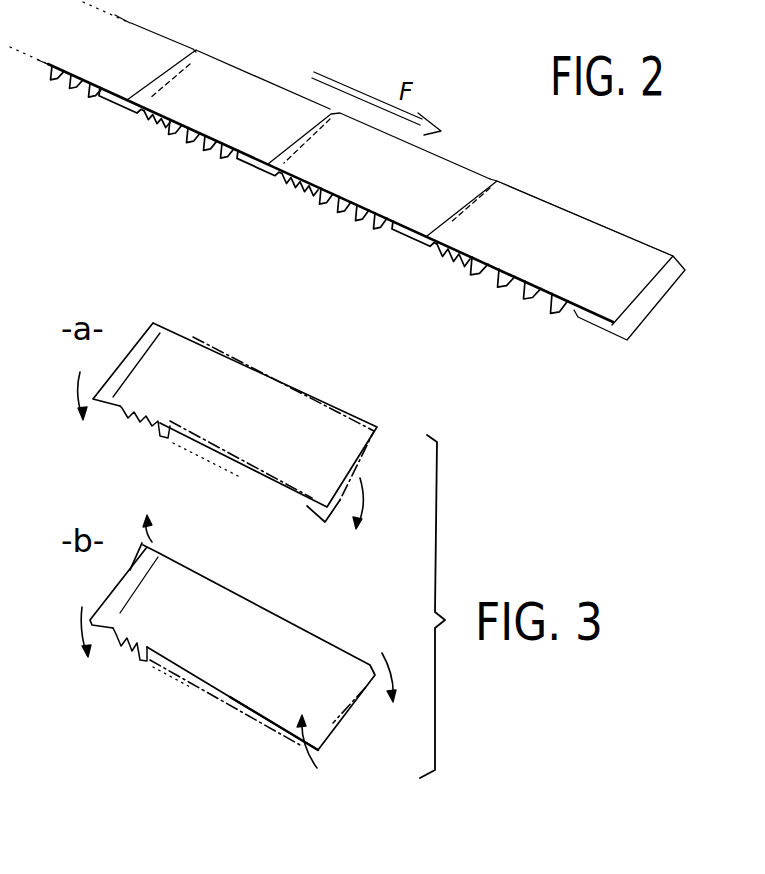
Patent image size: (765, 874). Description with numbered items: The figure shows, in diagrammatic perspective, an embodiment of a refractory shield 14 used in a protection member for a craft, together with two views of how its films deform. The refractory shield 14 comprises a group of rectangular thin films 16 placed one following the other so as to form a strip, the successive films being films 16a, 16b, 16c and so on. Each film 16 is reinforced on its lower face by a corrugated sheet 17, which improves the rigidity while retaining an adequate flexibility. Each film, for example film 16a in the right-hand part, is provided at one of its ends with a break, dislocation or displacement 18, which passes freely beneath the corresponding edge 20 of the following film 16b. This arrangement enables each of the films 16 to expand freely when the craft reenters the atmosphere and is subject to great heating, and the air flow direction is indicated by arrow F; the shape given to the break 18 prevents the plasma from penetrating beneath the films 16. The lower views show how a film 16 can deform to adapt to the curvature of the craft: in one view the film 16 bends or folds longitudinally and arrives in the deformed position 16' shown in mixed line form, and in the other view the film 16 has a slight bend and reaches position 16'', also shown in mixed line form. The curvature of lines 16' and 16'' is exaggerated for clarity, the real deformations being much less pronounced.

In FIG. 2, the refractory shield 14 is at (288, 196).
In FIG. 2, the thin film 16 is at (585, 198).
In FIG. 3, the thin film 16 is at (244, 545).
In FIG. 2, the film 16a is at (605, 257).
In FIG. 2, the film 16b is at (432, 170).
In FIG. 2, the film 16c is at (257, 100).
In FIG. 2, the corrugated sheet 17 is at (557, 318).
In FIG. 2, the break 18 is at (428, 246).
In FIG. 2, the edge 20 is at (466, 259).
In FIG. 3, the deformed position 16' is at (272, 407).
In FIG. 3, the position 16'' is at (274, 711).